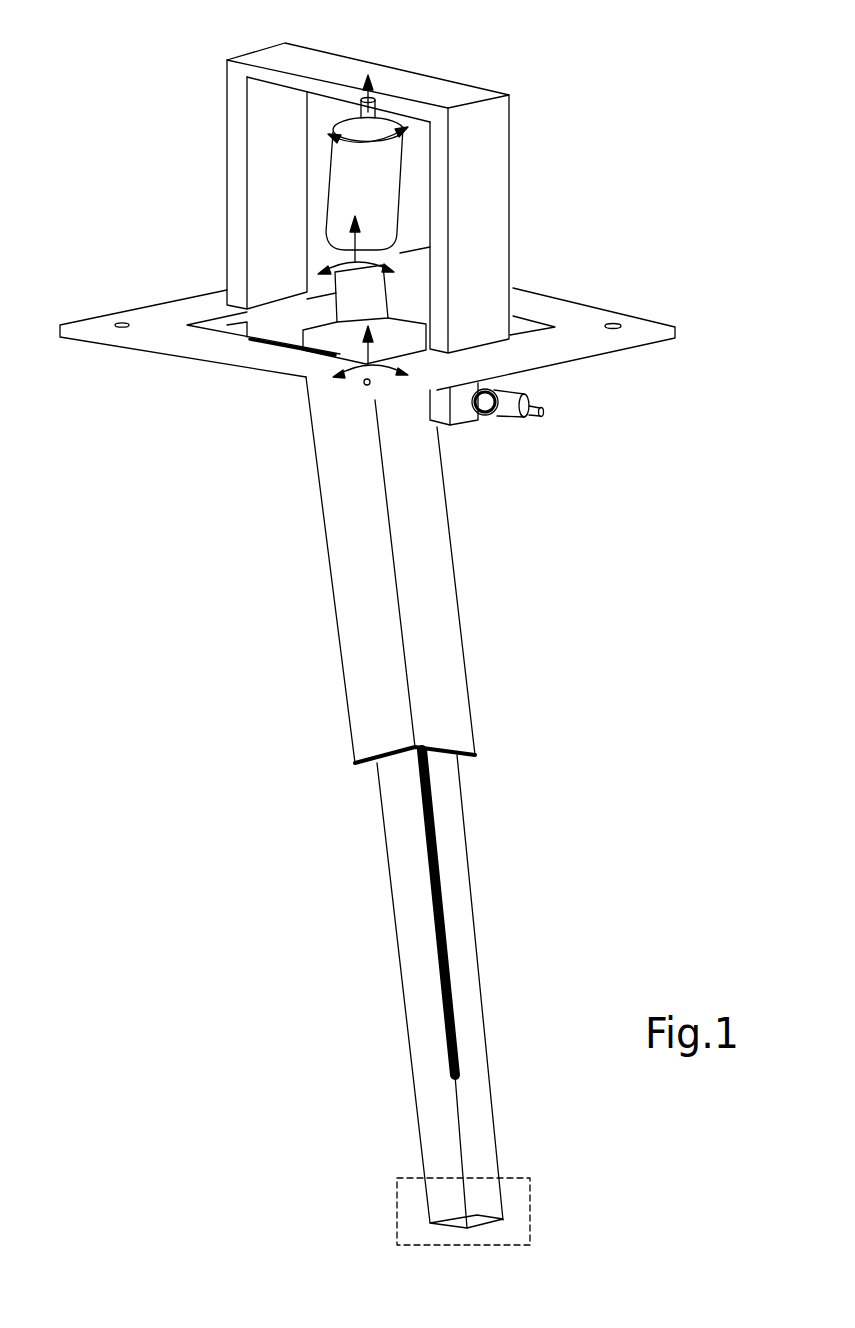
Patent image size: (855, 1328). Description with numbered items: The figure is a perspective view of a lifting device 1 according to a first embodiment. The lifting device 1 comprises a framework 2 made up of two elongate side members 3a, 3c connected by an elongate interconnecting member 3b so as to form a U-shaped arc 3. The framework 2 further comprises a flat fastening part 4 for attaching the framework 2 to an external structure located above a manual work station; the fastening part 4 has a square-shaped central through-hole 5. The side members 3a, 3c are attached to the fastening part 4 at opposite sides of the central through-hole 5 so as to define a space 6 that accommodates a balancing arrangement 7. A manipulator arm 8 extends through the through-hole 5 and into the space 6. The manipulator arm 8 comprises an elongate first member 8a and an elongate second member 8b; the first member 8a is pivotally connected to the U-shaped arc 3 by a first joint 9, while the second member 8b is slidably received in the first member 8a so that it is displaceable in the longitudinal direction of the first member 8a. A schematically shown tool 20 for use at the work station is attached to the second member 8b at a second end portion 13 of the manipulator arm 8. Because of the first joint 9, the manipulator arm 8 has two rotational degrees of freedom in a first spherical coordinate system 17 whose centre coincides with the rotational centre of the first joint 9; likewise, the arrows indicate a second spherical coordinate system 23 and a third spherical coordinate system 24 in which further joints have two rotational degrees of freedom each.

The lifting device 1 is at (585, 86).
The framework 2 is at (525, 265).
The U-shaped arc 3 is at (361, 186).
The side member 3a is at (236, 184).
The interconnecting member 3b is at (365, 68).
The side member 3c is at (489, 163).
The fastening part 4 is at (649, 322).
The central through-hole 5 is at (407, 314).
The space 6 is at (412, 147).
The balancing arrangement 7 is at (362, 156).
The manipulator arm 8 is at (402, 802).
The first member 8a is at (438, 552).
The second member 8b is at (464, 989).
The first joint 9 is at (340, 357).
The second end portion 13 is at (432, 1147).
The first spherical coordinate system 17 is at (345, 392).
The tool 20 is at (517, 1211).
The second spherical coordinate system 23 is at (317, 264).
The third spherical coordinate system 24 is at (350, 110).